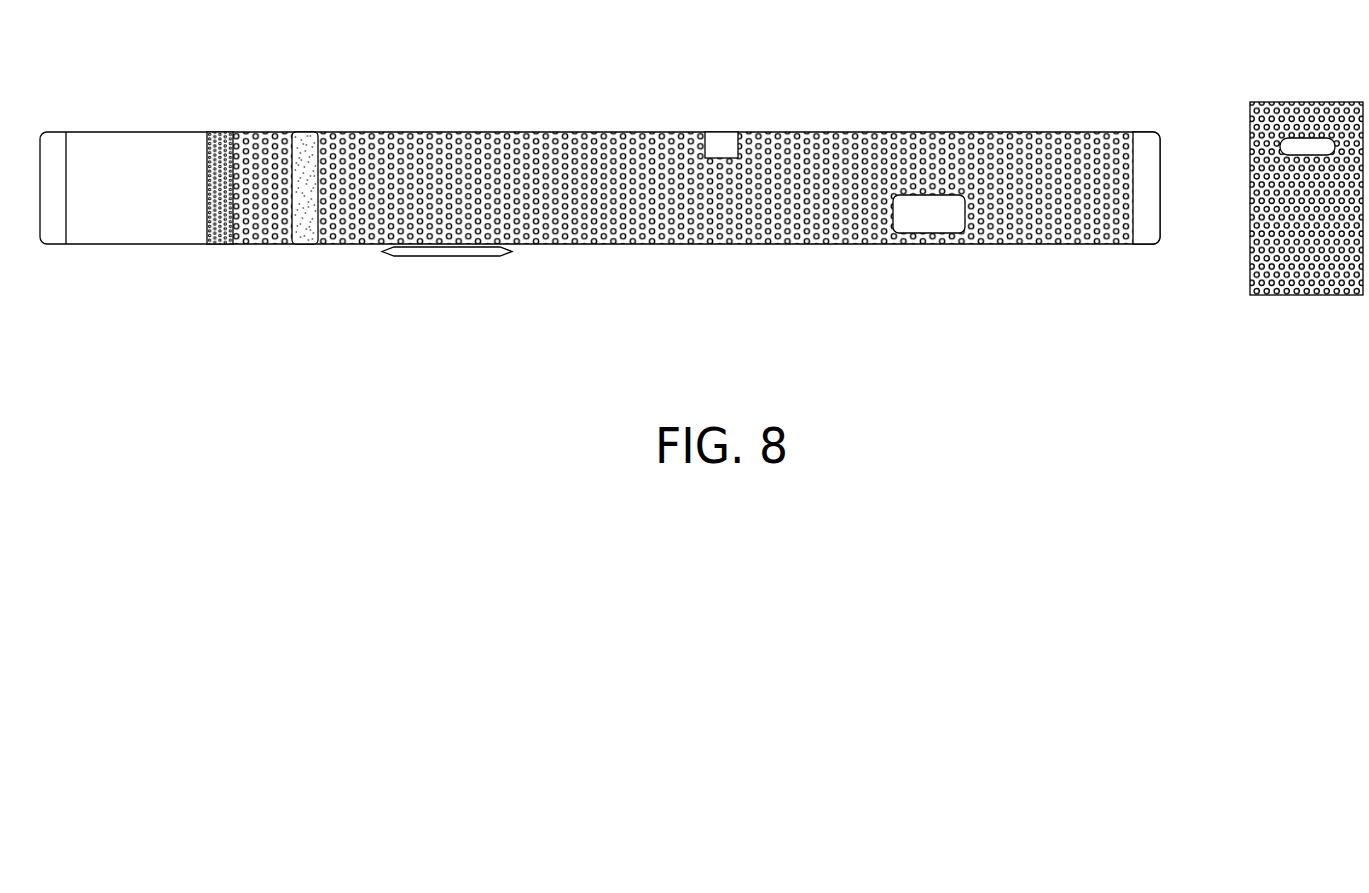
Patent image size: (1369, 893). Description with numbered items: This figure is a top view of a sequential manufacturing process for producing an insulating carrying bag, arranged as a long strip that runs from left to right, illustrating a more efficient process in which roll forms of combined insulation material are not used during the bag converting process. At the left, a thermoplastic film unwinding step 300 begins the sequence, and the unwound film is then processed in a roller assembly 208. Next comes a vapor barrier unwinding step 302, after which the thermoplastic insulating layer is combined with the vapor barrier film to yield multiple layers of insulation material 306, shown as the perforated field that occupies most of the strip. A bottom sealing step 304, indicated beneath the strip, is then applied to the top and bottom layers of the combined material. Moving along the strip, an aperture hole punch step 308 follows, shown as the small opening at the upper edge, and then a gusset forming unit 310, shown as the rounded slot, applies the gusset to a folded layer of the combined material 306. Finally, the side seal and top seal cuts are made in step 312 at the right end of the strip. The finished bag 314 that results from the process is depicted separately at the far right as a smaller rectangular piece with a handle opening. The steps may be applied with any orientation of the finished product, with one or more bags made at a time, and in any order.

The thermoplastic film unwinding step 300 is at (57, 150).
The roller assembly 208 is at (220, 148).
The vapor barrier unwinding step 302 is at (308, 153).
The bottom sealing step 304 is at (437, 251).
The multiple layers of insulation material 306 is at (442, 182).
The aperture hole punch step 308 is at (722, 152).
The gusset forming unit 310 is at (923, 218).
The side seal and top seal cut step 312 is at (1147, 218).
The finished bag 314 is at (1327, 243).